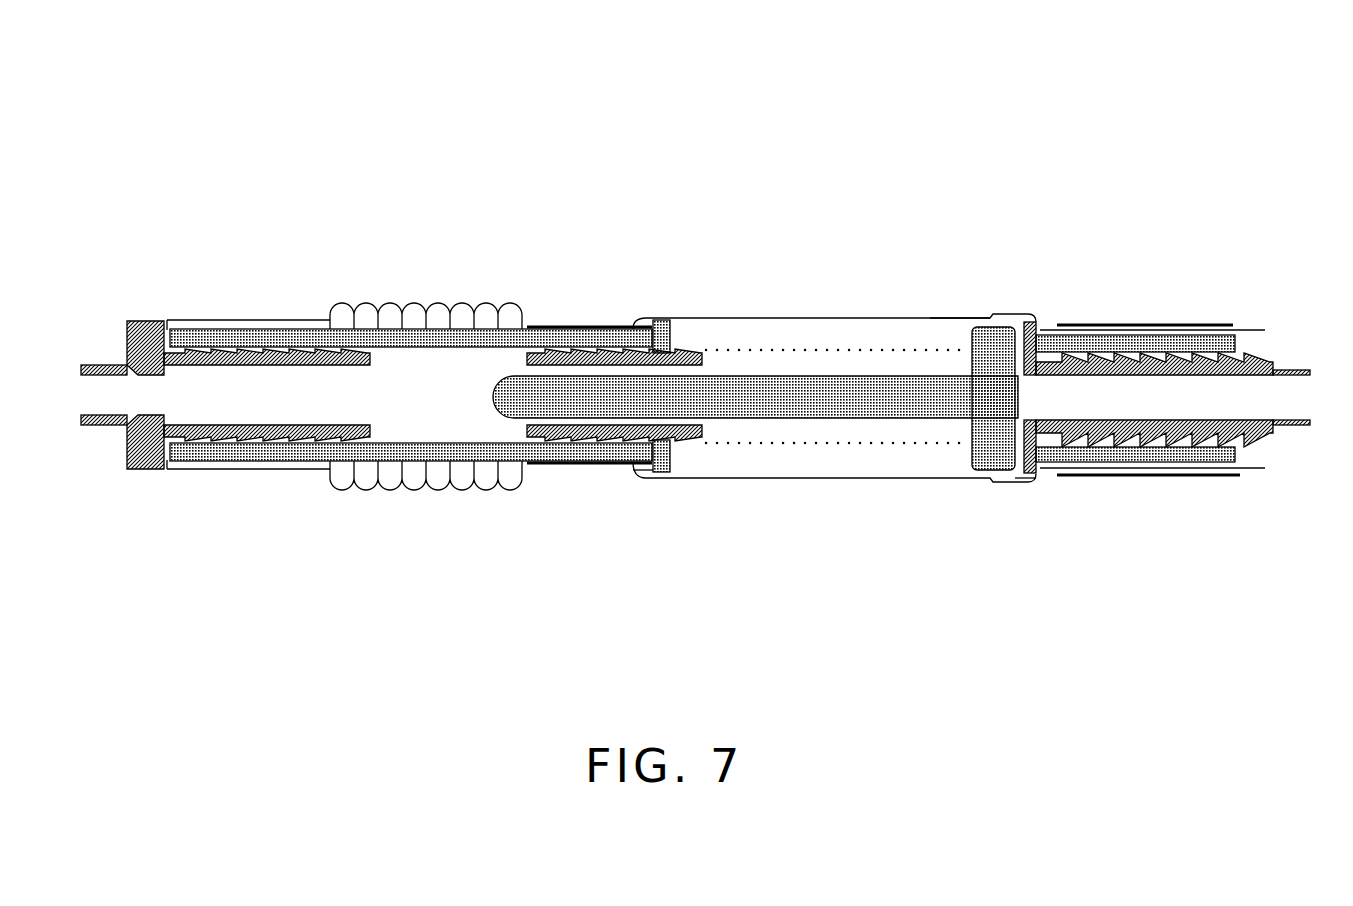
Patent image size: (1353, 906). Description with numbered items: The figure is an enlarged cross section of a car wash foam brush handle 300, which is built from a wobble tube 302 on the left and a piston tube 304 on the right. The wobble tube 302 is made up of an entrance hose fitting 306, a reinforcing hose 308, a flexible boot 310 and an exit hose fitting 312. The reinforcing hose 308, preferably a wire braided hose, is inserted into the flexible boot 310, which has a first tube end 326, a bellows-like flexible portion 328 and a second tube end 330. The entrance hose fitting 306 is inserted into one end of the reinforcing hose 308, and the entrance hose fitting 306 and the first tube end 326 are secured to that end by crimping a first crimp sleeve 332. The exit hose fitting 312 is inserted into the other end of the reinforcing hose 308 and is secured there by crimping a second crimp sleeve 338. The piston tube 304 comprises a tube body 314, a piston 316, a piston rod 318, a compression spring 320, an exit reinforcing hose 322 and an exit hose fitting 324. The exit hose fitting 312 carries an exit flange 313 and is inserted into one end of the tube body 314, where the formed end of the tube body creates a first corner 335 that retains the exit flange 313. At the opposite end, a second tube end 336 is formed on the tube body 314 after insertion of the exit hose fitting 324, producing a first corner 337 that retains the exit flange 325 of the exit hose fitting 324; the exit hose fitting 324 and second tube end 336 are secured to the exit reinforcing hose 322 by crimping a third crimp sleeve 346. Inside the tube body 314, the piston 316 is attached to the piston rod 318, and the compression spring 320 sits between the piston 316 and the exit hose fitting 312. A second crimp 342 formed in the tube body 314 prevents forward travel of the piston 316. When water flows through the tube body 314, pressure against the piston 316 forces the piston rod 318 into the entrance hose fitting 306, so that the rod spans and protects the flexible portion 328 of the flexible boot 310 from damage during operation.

The car wash foam brush handle 300 is at (705, 135).
The wobble tube 302 is at (373, 195).
The piston tube 304 is at (990, 207).
The entrance hose fitting 306 is at (143, 330).
The reinforcing hose 308 is at (207, 462).
The flexible boot 310 is at (478, 285).
The exit hose fitting 312 is at (702, 475).
The exit flange 313 is at (670, 472).
The tube body 314 is at (745, 316).
The piston 316 is at (990, 472).
The piston rod 318 is at (900, 403).
The compression spring 320 is at (810, 340).
The exit reinforcing hose 322 is at (1147, 452).
The exit hose fitting 324 is at (1247, 435).
The exit flange 325 is at (1022, 478).
The first tube end 326 is at (268, 464).
The flexible portion 328 is at (416, 488).
The second tube end 330 is at (568, 466).
The first crimp sleeve 332 is at (293, 318).
The first corner 335 is at (642, 318).
The second tube end 336 is at (1100, 330).
The first corner 337 is at (1033, 316).
The second crimp sleeve 338 is at (545, 465).
The second crimp 342 is at (948, 318).
The third crimp sleeve 346 is at (1077, 480).